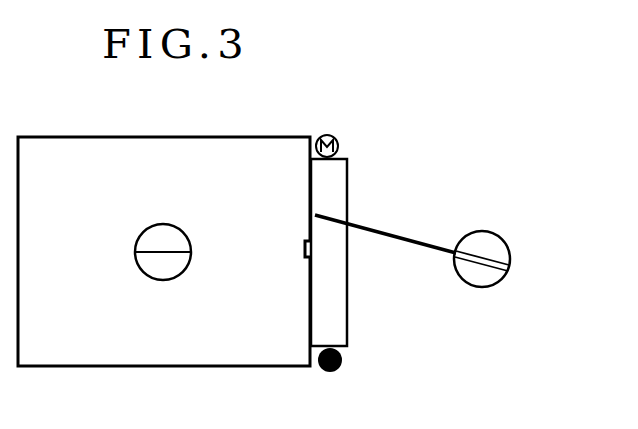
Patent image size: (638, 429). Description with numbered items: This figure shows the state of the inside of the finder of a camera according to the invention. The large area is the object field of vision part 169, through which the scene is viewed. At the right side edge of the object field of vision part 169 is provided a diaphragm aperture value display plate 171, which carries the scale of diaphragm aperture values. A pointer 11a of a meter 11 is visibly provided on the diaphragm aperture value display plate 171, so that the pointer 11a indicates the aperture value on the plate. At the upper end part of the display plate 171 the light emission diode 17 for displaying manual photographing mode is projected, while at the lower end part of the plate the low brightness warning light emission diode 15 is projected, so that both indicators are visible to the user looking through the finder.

The object field of vision part 169 is at (72, 160).
The light emission diode for displaying manual photographing mode 17 is at (337, 138).
The diaphragm aperture value display plate 171 is at (343, 188).
The meter 11 is at (478, 231).
The pointer 11a is at (389, 237).
The low brightness warning light emission diode 15 is at (343, 365).